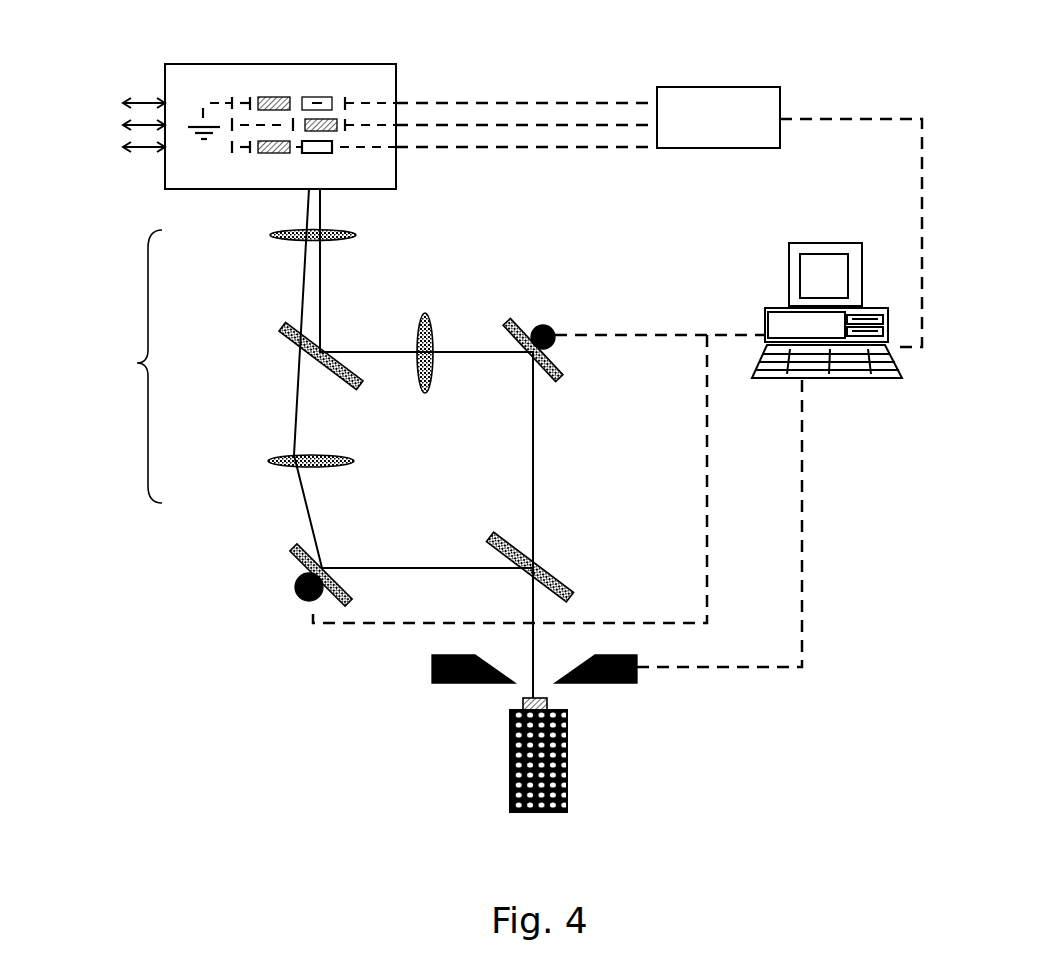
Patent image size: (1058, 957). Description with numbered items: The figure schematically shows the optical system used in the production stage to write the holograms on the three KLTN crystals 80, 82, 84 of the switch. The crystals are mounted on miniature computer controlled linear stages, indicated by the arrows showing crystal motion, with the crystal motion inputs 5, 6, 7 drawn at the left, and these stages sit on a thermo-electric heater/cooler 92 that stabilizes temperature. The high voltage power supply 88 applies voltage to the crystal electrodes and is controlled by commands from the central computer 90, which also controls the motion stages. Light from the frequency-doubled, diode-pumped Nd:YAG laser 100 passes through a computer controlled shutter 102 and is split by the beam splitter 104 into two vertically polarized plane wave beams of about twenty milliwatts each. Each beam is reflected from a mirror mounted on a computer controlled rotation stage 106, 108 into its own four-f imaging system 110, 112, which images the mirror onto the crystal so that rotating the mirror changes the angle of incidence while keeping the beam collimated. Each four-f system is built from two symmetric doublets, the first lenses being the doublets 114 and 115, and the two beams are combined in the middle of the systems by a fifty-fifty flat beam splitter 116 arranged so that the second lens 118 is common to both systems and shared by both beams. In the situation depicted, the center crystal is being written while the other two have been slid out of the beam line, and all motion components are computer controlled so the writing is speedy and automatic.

The input line 5 is at (122, 100).
The input line 6 is at (122, 123).
The input line 7 is at (122, 146).
The KLTN crystal 80 is at (267, 82).
The KLTN crystal 82 is at (330, 100).
The KLTN crystal 84 is at (260, 157).
The high voltage power supply 88 is at (686, 150).
The central computer 90 is at (788, 262).
The thermo-electric heater/cooler 92 is at (408, 175).
The laser 100 is at (500, 757).
The shutter 102 is at (640, 678).
The beam splitter 104 is at (560, 572).
The rotation stage 106 is at (558, 350).
The rotation stage 108 is at (285, 590).
The 4f imaging system 110 is at (128, 366).
The 4f imaging system 112 is at (352, 214).
The doublet 114 is at (433, 366).
The doublet 115 is at (265, 462).
The flat beam splitter 116 is at (283, 345).
The second lens 118 is at (268, 243).